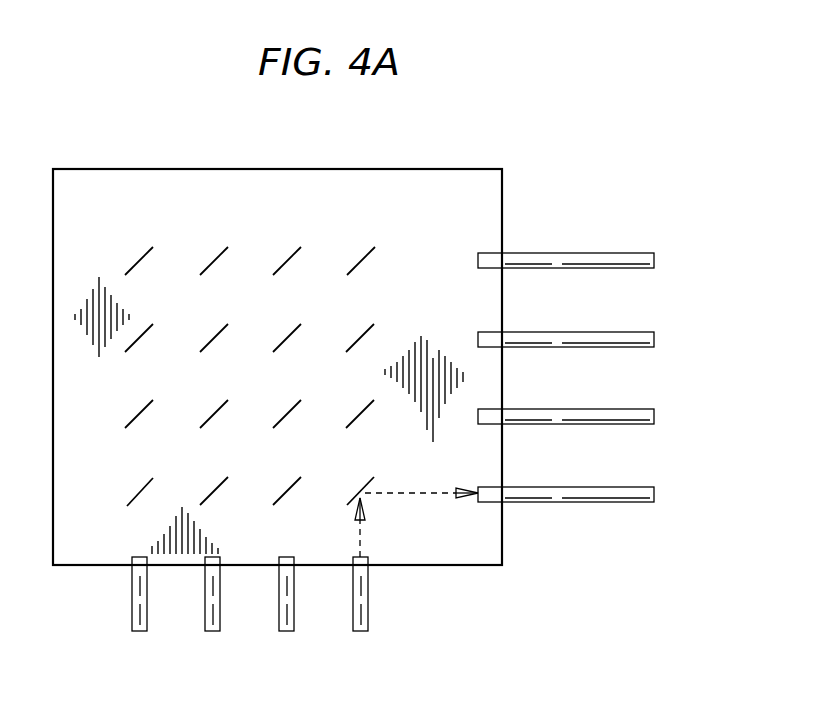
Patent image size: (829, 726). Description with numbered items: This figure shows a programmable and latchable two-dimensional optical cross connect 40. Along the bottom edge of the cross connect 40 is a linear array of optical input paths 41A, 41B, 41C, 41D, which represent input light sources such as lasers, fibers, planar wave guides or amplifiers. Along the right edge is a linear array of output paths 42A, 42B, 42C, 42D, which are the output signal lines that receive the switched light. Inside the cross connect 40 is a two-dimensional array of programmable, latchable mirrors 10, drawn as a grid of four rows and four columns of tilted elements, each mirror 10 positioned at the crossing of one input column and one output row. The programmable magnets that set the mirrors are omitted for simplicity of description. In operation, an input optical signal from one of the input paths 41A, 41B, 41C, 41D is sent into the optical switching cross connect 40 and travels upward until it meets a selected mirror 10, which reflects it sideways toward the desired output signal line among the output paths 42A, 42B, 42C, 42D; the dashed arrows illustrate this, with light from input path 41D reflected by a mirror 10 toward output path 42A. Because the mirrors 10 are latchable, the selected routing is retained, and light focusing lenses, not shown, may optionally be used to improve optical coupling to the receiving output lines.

The two-dimensional optical cross connect 40 is at (135, 145).
The programmable, latchable mirror 10 is at (359, 265).
The optical input path 41A is at (137, 632).
The optical input path 41B is at (210, 632).
The optical input path 41C is at (284, 632).
The optical input path 41D is at (358, 632).
The output path 42A is at (655, 495).
The output path 42B is at (655, 417).
The output path 42C is at (655, 340).
The output path 42D is at (655, 261).